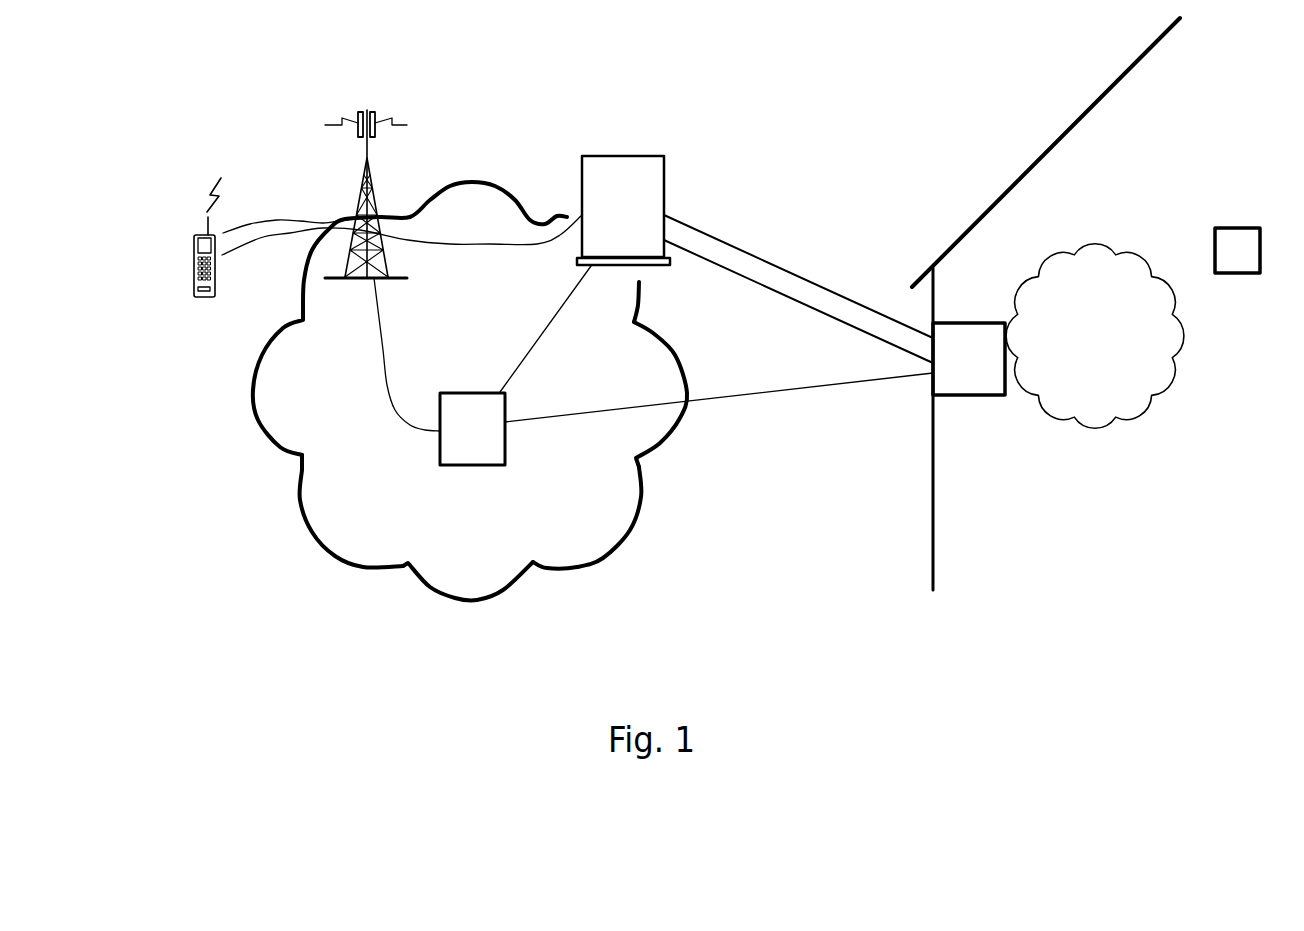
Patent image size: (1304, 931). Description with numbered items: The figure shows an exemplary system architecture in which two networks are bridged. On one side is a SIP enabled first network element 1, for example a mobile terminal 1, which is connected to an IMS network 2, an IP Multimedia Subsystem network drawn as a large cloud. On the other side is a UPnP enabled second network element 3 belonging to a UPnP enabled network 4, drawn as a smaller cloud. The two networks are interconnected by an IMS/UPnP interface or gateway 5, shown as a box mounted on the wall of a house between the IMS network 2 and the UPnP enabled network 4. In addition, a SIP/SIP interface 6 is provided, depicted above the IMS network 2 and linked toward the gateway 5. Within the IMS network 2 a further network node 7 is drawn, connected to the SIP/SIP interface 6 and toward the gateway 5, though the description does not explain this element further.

The first network element 1 is at (193, 272).
The IMS network 2 is at (268, 393).
The second network element 3 is at (1237, 253).
The UPnP enabled network 4 is at (1150, 363).
The IMS/UPnP gateway 5 is at (977, 373).
The SIP/SIP interface 6 is at (642, 188).
The network node 7 is at (493, 457).